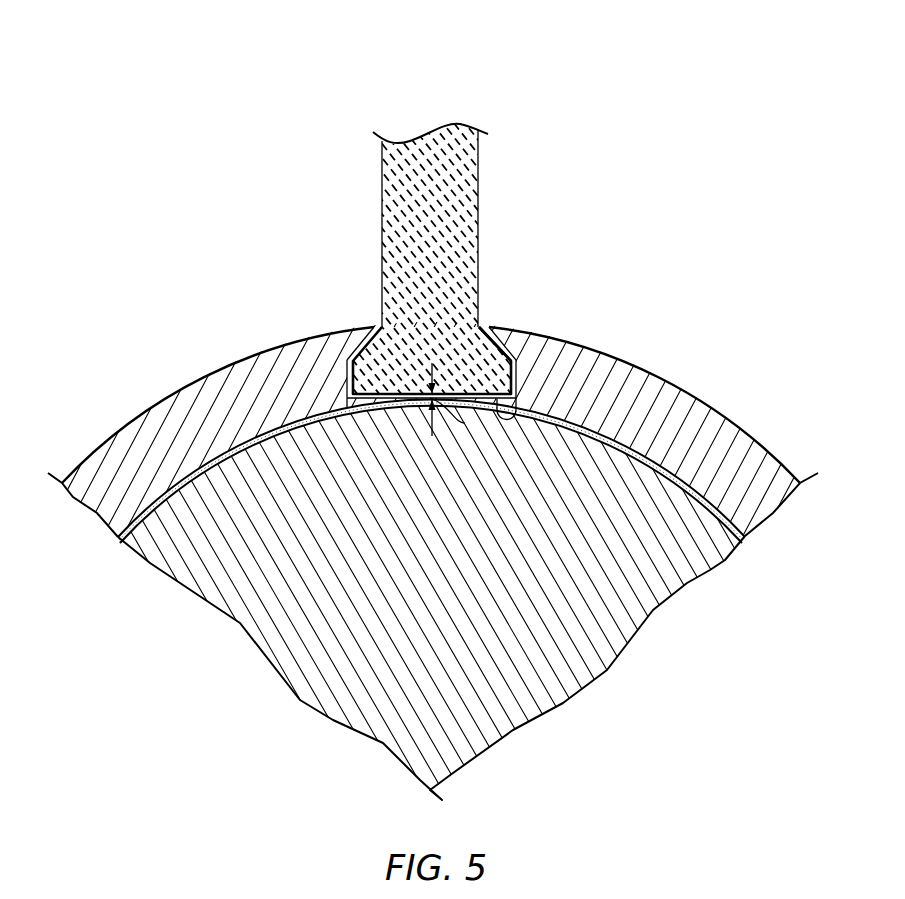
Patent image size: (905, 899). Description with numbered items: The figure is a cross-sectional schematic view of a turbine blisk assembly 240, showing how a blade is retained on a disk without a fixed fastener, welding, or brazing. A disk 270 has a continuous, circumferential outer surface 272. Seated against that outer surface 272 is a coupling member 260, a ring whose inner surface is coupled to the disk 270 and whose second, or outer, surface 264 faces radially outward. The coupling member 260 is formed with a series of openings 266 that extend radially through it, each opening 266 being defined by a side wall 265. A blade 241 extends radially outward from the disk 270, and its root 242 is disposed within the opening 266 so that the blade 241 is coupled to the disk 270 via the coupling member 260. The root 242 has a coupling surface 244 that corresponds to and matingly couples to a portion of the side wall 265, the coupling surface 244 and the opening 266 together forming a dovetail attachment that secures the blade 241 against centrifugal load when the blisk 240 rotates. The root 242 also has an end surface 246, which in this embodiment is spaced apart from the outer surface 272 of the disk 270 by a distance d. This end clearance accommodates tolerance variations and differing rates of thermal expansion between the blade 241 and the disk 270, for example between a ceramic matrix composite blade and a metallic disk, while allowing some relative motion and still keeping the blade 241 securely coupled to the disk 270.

The blisk assembly 240 is at (620, 142).
The blade 241 is at (478, 243).
The root 242 is at (372, 345).
The coupling surface 244 is at (502, 346).
The end surface 246 is at (522, 410).
The coupling member 260 is at (452, 404).
The second surface 264 is at (593, 346).
The side wall 265 is at (348, 362).
The opening 266 is at (343, 386).
The disk 270 is at (676, 560).
The outer surface 272 is at (727, 518).